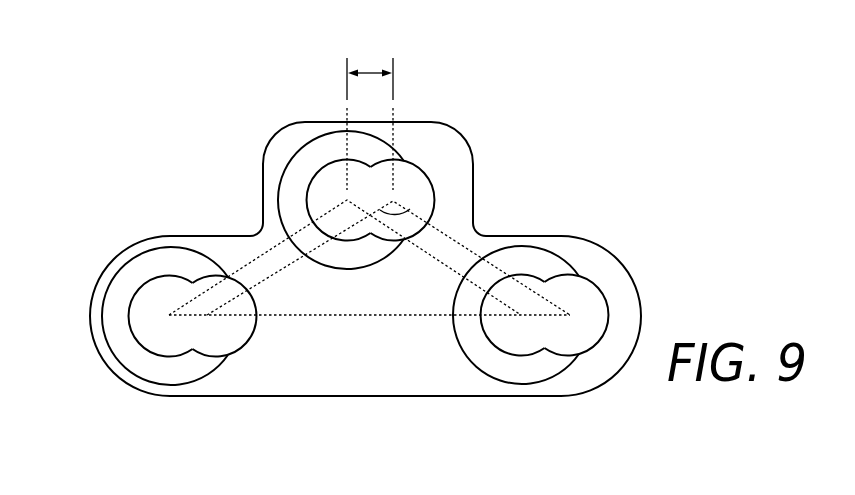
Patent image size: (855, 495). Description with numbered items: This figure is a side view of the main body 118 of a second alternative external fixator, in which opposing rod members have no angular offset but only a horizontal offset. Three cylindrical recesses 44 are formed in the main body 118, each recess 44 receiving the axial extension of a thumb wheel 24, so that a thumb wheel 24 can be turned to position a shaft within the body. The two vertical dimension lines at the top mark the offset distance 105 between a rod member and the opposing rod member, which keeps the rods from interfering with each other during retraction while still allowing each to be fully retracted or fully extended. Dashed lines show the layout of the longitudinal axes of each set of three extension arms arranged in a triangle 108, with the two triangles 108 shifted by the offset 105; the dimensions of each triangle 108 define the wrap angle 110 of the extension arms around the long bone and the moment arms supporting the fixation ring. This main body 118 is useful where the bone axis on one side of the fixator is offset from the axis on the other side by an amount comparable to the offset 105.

The main body 118 is at (178, 118).
The thumb wheel 24 is at (365, 292).
The cylindrical recess 44 is at (282, 168).
The offset distance 105 is at (372, 72).
The triangle 108 is at (207, 315).
The wrap angle 110 is at (398, 212).